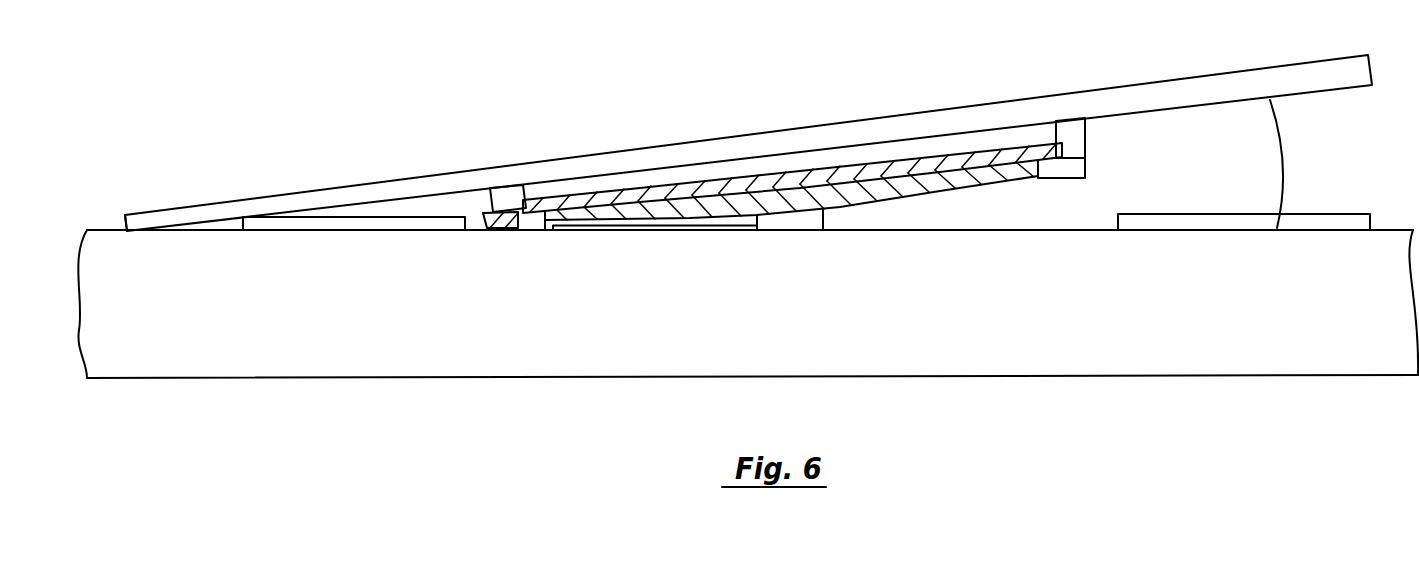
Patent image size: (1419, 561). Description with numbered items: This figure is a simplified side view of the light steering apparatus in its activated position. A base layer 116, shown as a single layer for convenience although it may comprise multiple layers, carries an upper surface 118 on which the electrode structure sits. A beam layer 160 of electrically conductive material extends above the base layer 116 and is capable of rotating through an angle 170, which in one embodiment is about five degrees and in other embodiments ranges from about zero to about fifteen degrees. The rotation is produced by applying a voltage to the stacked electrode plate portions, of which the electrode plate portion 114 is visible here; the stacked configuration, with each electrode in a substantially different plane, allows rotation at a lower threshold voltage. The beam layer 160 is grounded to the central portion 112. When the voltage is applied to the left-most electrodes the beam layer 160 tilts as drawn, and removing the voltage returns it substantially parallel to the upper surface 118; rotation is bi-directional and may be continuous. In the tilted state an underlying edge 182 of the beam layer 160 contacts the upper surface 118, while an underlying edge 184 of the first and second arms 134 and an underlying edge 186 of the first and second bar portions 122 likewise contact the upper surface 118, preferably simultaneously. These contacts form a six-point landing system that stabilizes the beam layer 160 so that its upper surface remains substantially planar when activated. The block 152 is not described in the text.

The central portion 112 is at (795, 216).
The electrode plate portion 114 is at (343, 222).
The base layer 116 is at (1115, 316).
The upper surface 118 is at (1396, 220).
The first and second bar portions 122 is at (957, 189).
The first and second arms 134 is at (1078, 170).
The support block 152 is at (1087, 130).
The beam layer 160 is at (823, 135).
The angle 170 is at (1316, 164).
The underlying edge 182 is at (127, 241).
The underlying edge 184 is at (486, 242).
The underlying edge 186 is at (551, 242).